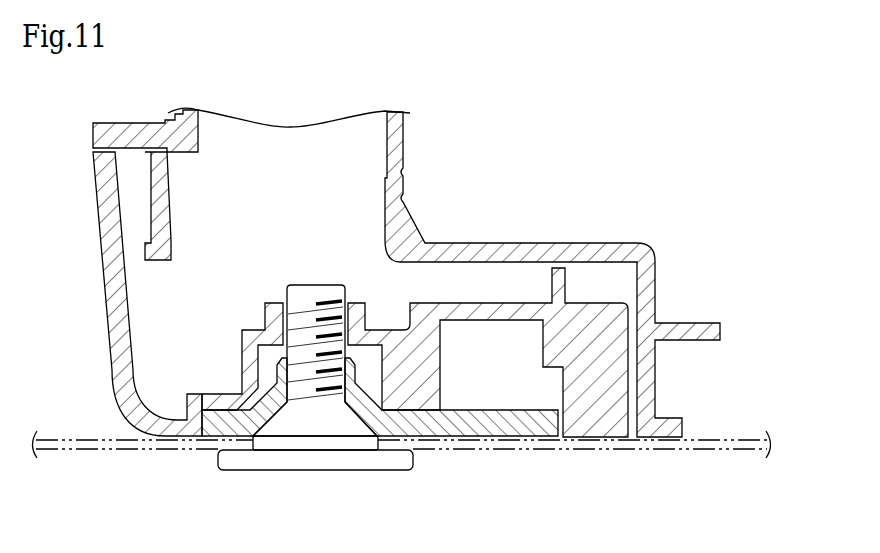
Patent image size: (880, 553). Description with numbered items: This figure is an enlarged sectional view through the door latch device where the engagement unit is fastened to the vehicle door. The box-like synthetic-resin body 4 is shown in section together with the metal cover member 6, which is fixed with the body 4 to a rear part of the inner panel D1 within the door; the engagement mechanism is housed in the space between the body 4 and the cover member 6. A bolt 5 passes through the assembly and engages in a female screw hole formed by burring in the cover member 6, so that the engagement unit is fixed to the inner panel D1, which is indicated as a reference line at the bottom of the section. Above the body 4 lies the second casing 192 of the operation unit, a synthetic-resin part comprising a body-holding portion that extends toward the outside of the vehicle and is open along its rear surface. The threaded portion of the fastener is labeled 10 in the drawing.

The second casing 192 is at (582, 243).
The body 4 is at (610, 303).
The cover member 6 is at (495, 437).
The fastening screw 10 is at (289, 378).
The bolt 5 is at (347, 472).
The inner panel D1 is at (712, 440).